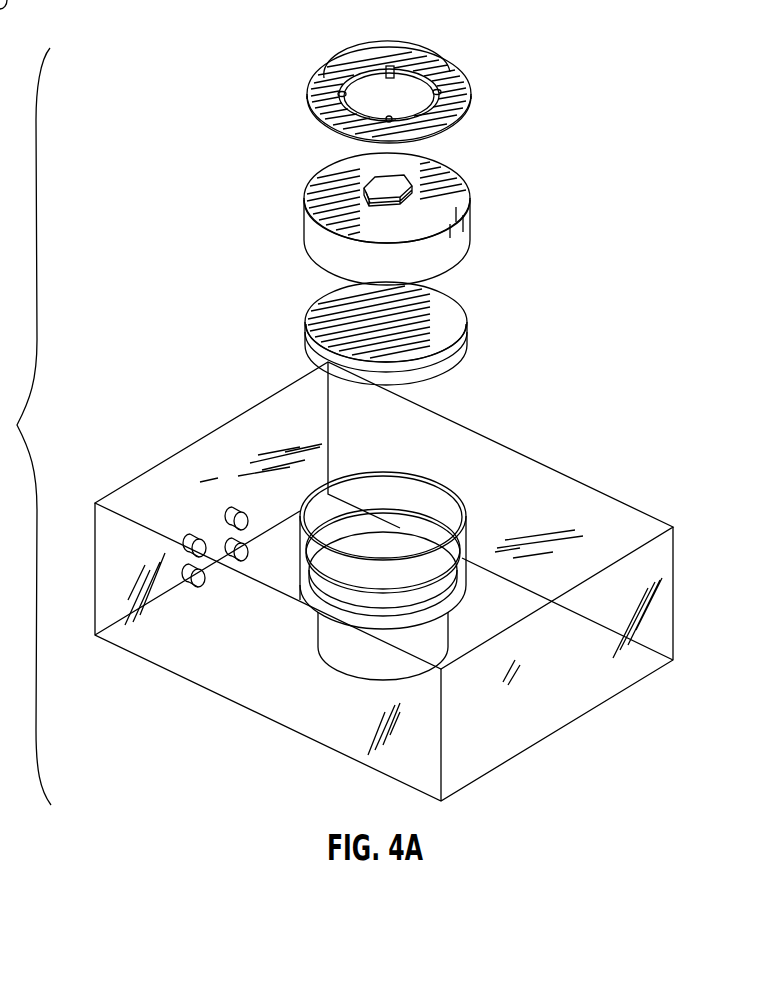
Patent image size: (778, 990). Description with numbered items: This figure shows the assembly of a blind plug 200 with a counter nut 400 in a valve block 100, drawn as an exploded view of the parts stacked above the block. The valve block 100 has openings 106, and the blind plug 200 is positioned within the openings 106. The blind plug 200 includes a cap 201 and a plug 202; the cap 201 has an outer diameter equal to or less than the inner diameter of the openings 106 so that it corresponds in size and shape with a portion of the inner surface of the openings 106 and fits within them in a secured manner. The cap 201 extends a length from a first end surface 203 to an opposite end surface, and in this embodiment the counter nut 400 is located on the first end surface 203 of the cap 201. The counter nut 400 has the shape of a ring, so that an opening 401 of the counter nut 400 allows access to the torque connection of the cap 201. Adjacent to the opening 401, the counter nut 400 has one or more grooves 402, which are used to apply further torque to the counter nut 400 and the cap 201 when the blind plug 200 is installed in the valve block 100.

The valve block 100 is at (600, 520).
The openings 106 is at (298, 527).
The blind plug 200 is at (236, 192).
The cap 201 is at (470, 226).
The plug 202 is at (462, 348).
The first end surface 203 is at (326, 180).
The counter nut 400 is at (467, 118).
The opening 401 is at (400, 95).
The grooves 402 is at (332, 80).